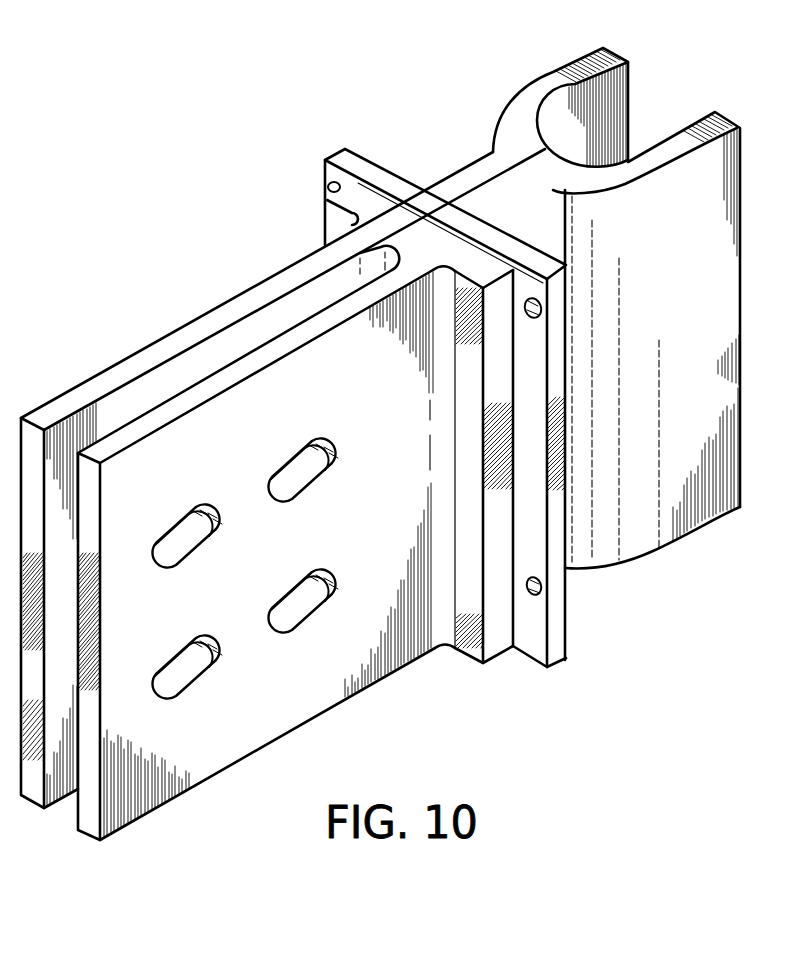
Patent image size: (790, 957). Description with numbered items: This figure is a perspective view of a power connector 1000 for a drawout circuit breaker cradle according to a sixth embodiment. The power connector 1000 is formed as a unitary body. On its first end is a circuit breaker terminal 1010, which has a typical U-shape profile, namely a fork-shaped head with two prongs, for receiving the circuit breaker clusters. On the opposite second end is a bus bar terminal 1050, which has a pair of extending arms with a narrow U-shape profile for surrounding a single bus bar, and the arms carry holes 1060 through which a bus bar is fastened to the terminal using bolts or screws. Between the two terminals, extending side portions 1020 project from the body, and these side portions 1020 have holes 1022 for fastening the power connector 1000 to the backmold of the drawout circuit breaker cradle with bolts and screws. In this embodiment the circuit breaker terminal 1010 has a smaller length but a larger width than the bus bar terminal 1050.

The power connector 1000 is at (222, 160).
The circuit breaker terminal 1010 is at (550, 73).
The side portions 1020 is at (343, 157).
The holes 1022 is at (532, 606).
The bus bar terminal 1050 is at (150, 345).
The holes 1060 is at (209, 698).